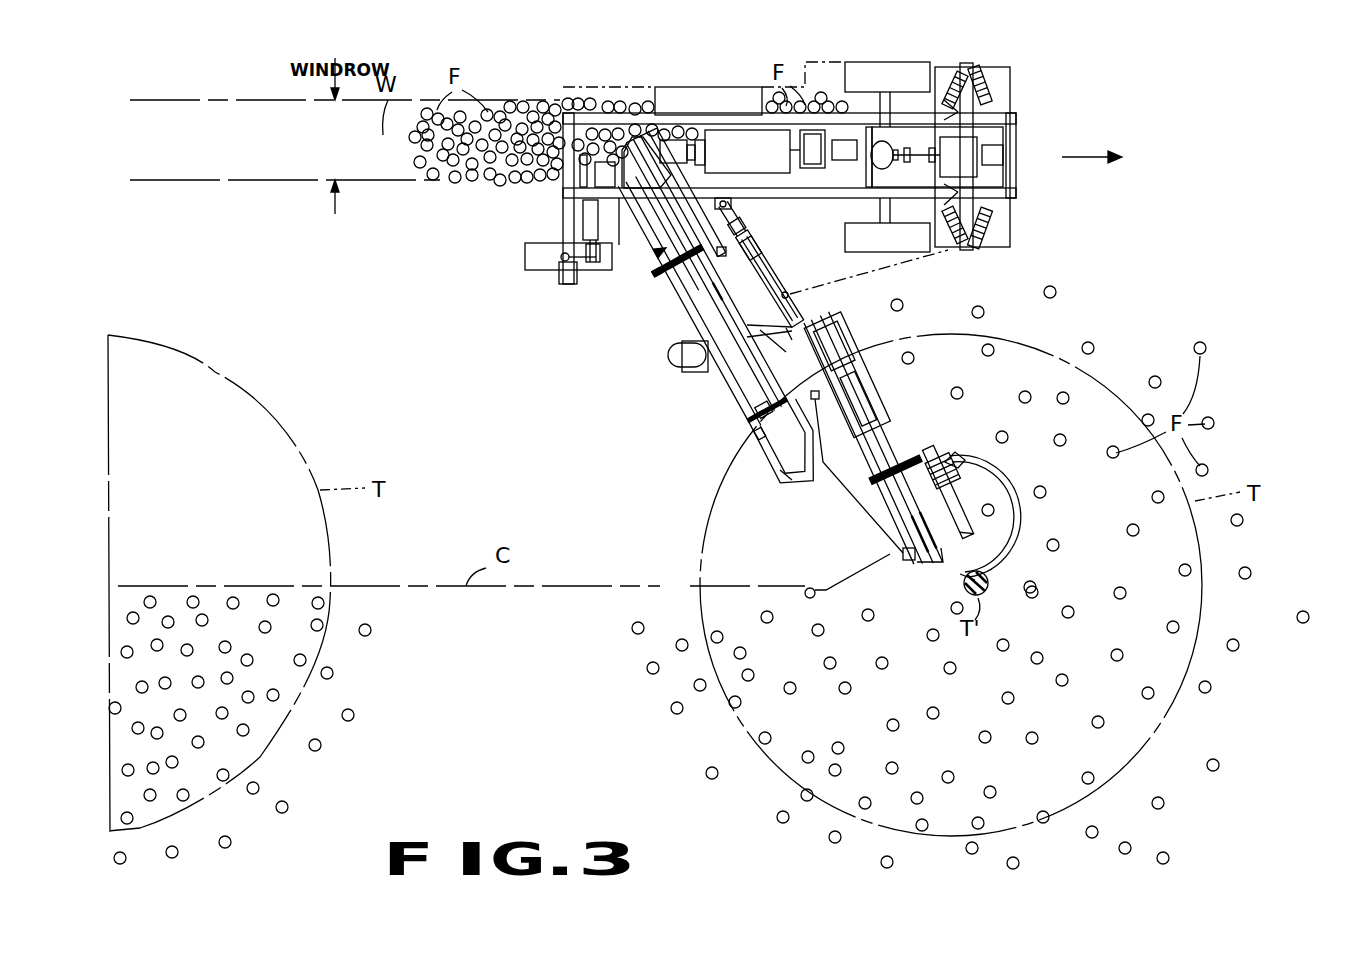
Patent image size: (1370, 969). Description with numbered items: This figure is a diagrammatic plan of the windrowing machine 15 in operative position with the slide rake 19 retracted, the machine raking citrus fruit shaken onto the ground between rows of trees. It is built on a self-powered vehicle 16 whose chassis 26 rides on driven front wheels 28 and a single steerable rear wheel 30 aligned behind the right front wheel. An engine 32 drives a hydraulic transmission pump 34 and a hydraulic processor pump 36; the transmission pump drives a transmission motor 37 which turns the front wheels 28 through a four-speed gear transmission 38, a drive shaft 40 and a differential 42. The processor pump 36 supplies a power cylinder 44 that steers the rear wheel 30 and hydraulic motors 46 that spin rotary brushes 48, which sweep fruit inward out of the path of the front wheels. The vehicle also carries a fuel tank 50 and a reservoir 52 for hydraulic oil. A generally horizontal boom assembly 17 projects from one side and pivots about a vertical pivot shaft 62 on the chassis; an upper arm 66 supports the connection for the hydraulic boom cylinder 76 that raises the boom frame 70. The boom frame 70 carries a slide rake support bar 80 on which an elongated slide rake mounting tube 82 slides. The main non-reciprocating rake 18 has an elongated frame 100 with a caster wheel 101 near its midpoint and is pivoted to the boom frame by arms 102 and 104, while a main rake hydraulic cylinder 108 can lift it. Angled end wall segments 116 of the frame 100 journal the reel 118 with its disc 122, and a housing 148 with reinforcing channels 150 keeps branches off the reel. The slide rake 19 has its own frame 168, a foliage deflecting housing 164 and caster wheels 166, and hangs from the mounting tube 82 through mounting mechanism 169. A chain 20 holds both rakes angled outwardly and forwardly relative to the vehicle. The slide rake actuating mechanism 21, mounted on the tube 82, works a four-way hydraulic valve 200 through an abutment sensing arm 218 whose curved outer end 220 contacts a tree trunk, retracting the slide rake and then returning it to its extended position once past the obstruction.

The windrowing machine 15 is at (1090, 62).
The three-wheeled vehicle 16 is at (1024, 186).
The boom assembly 17 is at (862, 327).
The main non-reciprocating rake 18 is at (752, 404).
The reciprocable slide rake 19 is at (890, 494).
The chain 20 is at (805, 295).
The slide rake actuating mechanism 21 is at (1022, 522).
The chassis 26 is at (1018, 118).
The driven front wheels 28 is at (882, 66).
The steerable rear wheel 30 is at (541, 250).
The engine 32 is at (746, 162).
The hydraulic transmission pump 34 is at (672, 138).
The hydraulic processor pump 36 is at (845, 160).
The transmission motor 37 is at (1000, 150).
The four-speed gear transmission 38 is at (973, 167).
The drive shaft 40 is at (921, 151).
The differential 42 is at (896, 165).
The power cylinder 44 is at (578, 185).
The hydraulic motors 46 is at (945, 109).
The rotary brushes 48 is at (960, 72).
The fuel tank 50 is at (704, 87).
The reservoir 52 is at (864, 196).
The vertical pivot shaft 62 is at (735, 206).
The upper arm 66 is at (742, 224).
The boom frame 70 is at (770, 284).
The hydraulic boom cylinder 76 is at (752, 242).
The slide rake support bar 80 is at (985, 522).
The elongated slide rake mounting tube 82 is at (905, 422).
The elongated frame 100 is at (686, 307).
The caster wheel 101 is at (667, 353).
The arm 102 is at (722, 247).
The arm 104 is at (770, 347).
The main rake hydraulic cylinder 108 is at (727, 258).
The end wall segments 116 is at (620, 185).
The reel 118 is at (662, 252).
The disc 122 is at (635, 148).
The housing 148 is at (766, 412).
The reinforcing channels 150 is at (683, 289).
The foliage deflecting housing 164 is at (903, 548).
The caster wheels 166 is at (819, 400).
The frame 168 is at (893, 525).
The mounting mechanism 169 is at (940, 454).
The four-way hydraulic valve 200 is at (960, 466).
The abutment sensing arm 218 is at (995, 548).
The curved outer end 220 is at (990, 573).